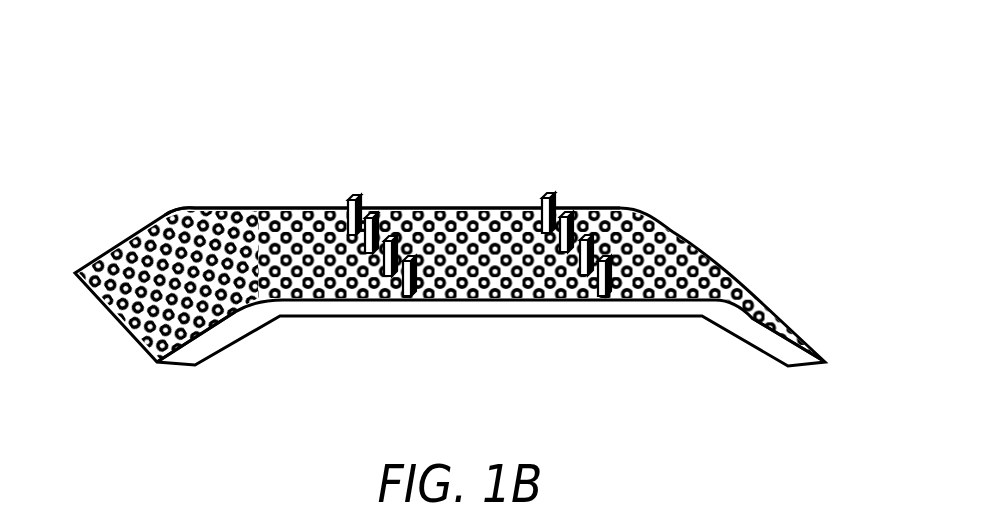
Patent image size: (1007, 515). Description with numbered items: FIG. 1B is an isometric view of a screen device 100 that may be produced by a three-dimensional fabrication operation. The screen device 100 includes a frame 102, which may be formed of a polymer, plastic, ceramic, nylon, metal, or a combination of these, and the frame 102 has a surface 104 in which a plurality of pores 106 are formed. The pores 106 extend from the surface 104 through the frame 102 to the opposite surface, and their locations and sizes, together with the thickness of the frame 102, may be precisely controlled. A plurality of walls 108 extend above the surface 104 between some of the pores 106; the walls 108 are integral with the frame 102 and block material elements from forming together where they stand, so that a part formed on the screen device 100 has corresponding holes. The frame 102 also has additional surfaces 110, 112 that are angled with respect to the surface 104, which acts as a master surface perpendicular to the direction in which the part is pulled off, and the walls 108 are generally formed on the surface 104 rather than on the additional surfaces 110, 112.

The screen device 100 is at (472, 60).
The frame 102 is at (155, 222).
The surface 104 is at (257, 226).
The pores 106 is at (284, 303).
The walls 108 is at (545, 199).
The additional surface 110 is at (180, 350).
The additional surface 112 is at (768, 330).